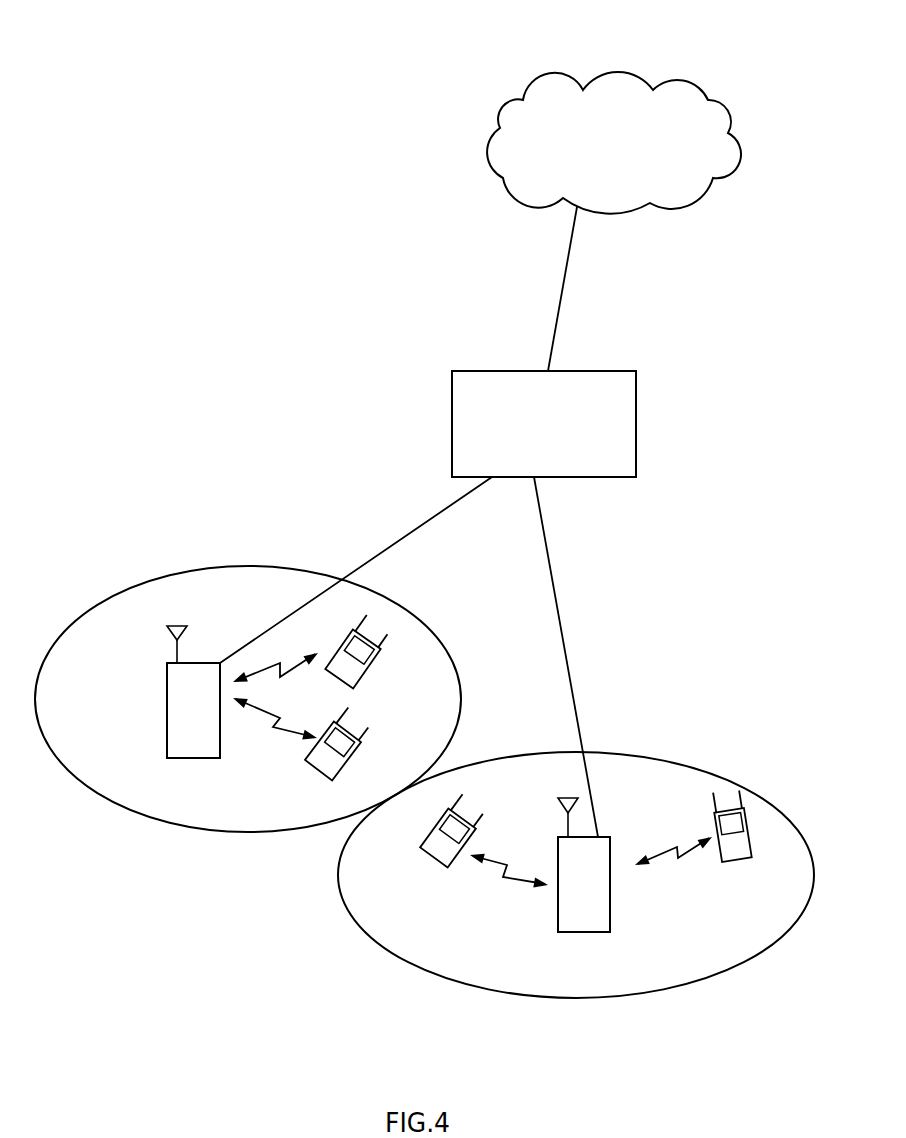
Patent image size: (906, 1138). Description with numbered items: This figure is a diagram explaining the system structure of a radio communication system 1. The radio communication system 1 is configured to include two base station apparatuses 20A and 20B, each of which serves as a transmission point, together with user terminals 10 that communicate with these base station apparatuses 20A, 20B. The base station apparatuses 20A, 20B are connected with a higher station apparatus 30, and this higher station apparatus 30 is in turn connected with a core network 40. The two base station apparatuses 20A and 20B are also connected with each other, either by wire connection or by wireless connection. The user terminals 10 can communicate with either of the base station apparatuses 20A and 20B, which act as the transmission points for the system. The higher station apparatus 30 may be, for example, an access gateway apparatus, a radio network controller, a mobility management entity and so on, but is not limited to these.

The radio communication system 1 is at (285, 349).
The user terminal 10 is at (368, 666).
The base station apparatus 20A is at (558, 917).
The base station apparatus 20B is at (167, 743).
The higher station apparatus 30 is at (636, 412).
The core network 40 is at (693, 80).